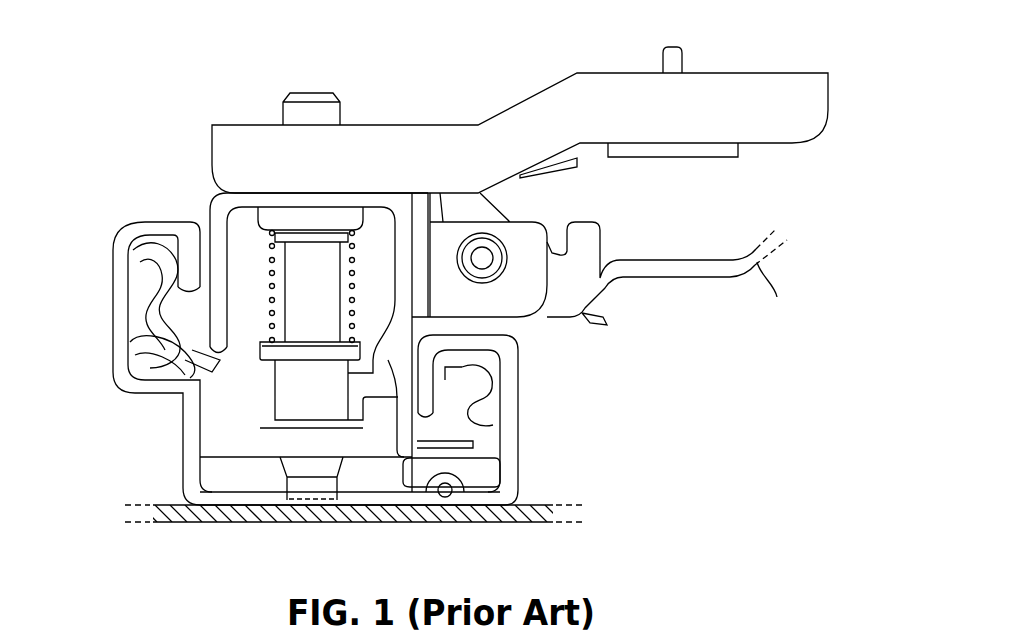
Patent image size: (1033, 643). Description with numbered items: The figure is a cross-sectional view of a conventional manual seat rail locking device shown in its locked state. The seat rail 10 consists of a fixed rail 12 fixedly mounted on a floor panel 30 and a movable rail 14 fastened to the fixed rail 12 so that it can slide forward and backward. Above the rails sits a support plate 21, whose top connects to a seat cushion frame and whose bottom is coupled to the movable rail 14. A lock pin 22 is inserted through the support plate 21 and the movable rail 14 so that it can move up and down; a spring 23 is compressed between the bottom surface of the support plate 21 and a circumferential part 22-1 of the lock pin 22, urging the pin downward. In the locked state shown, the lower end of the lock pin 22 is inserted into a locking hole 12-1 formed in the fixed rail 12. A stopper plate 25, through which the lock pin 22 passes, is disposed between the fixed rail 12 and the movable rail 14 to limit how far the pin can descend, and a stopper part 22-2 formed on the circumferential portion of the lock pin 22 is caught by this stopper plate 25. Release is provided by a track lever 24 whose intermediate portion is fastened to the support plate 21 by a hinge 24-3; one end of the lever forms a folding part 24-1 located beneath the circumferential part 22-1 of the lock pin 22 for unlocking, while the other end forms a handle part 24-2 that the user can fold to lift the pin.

The seat rail 10 is at (291, 345).
The fixed rail 12 is at (142, 405).
The locking hole 12-1 is at (297, 507).
The movable rail 14 is at (214, 189).
The support plate 21 is at (548, 110).
The lock pin 22 is at (267, 306).
The circumferential part 22-1 is at (265, 355).
The stopper part 22-2 is at (285, 420).
The spring 23 is at (353, 260).
The track lever 24 is at (603, 335).
The folding part 24-1 is at (375, 373).
The handle part 24-2 is at (750, 263).
The hinge 24-3 is at (487, 262).
The stopper plate 25 is at (370, 440).
The floor panel 30 is at (533, 507).